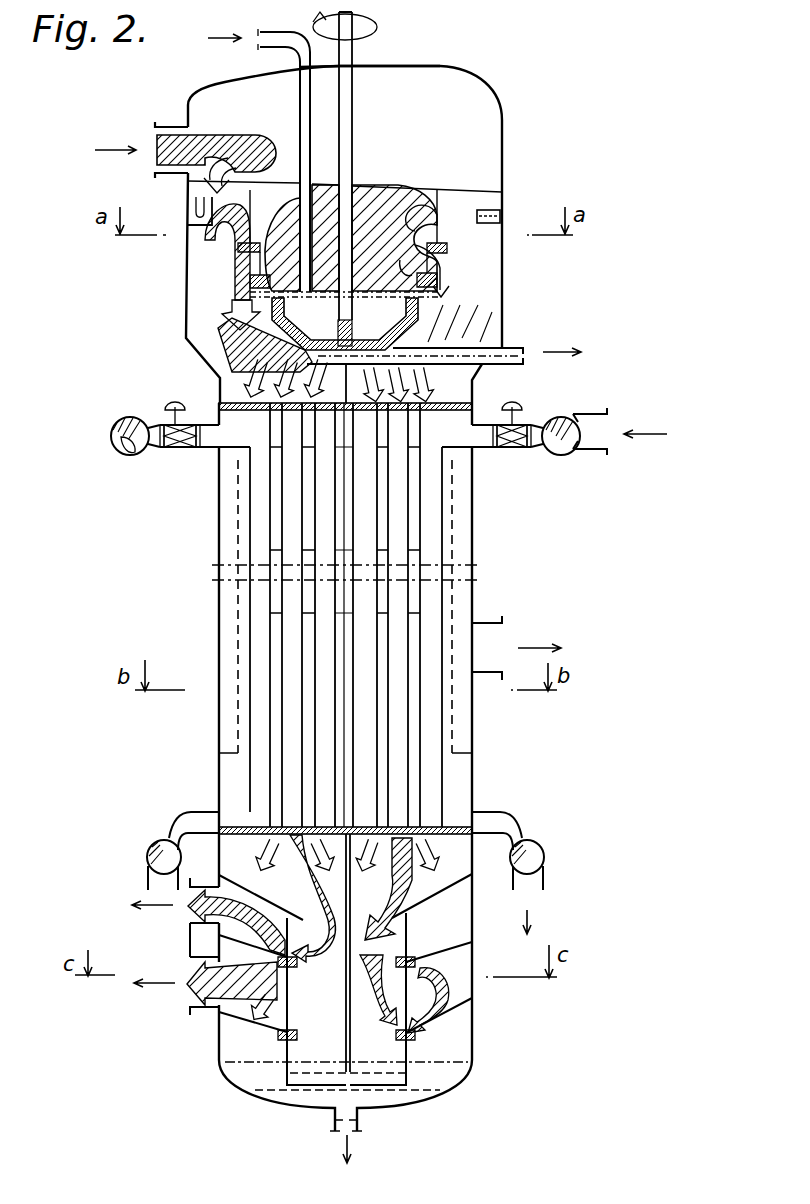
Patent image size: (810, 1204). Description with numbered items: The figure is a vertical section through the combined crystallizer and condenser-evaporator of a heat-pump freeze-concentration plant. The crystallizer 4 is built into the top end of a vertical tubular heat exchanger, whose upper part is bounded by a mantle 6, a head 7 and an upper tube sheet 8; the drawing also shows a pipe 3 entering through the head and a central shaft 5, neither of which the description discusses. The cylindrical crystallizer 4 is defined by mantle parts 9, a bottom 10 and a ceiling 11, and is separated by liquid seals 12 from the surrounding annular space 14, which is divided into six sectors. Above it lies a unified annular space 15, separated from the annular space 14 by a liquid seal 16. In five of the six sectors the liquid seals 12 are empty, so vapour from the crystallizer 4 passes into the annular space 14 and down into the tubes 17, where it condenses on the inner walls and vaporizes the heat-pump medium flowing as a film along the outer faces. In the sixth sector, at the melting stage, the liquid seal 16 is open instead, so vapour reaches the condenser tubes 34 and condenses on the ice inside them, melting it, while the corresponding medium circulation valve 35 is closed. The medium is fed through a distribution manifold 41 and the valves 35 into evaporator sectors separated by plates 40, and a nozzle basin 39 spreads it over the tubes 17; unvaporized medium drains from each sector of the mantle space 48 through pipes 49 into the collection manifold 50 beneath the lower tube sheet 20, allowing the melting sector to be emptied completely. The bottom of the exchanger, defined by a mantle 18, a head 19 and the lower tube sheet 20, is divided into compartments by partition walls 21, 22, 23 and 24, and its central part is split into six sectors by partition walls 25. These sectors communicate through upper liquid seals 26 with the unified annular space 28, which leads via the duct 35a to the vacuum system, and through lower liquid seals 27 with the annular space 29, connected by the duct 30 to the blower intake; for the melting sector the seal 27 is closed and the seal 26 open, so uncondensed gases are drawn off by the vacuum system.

The feed inlet pipe 3 is at (297, 60).
The crystallizer 4 is at (400, 190).
The stirrer shaft 5 is at (353, 101).
The mantle 6 is at (503, 311).
The head 7 is at (497, 96).
The upper tube sheet 8 is at (458, 402).
The mantle parts 9 is at (227, 223).
The bottom 10 is at (262, 363).
The ceiling 11 is at (407, 182).
The liquid seals 12 is at (257, 282).
The annular space 14 is at (480, 333).
The unified annular space 15 is at (453, 91).
The liquid seal 16 is at (187, 215).
The tubes 17 is at (440, 513).
The mantle 18 is at (488, 982).
The head 19 is at (460, 1087).
The lower tube sheet 20 is at (455, 822).
The partition wall 21 is at (222, 890).
The partition wall 22 is at (280, 922).
The partition wall 23 is at (277, 958).
The partition wall 24 is at (250, 1035).
The partition walls 25 is at (373, 1074).
The liquid seals 26 is at (414, 958).
The liquid seals 27 is at (410, 1036).
The annular space 28 is at (440, 921).
The annular space 29 is at (452, 1002).
The duct 30 is at (200, 1010).
The condenser tubes 34 is at (257, 513).
The medium circulation valve 35 is at (522, 422).
The duct 35a is at (190, 884).
The nozzle basin 39 is at (460, 450).
The plates 40 is at (345, 655).
The distribution manifold 41 is at (108, 440).
The mantle space 48 is at (462, 680).
The pipes 49 is at (202, 817).
The collection manifold 50 is at (160, 852).